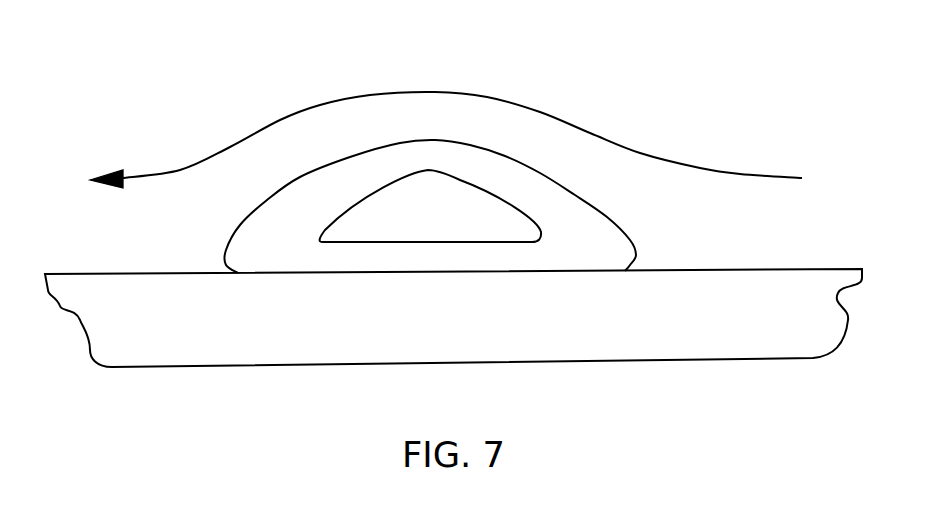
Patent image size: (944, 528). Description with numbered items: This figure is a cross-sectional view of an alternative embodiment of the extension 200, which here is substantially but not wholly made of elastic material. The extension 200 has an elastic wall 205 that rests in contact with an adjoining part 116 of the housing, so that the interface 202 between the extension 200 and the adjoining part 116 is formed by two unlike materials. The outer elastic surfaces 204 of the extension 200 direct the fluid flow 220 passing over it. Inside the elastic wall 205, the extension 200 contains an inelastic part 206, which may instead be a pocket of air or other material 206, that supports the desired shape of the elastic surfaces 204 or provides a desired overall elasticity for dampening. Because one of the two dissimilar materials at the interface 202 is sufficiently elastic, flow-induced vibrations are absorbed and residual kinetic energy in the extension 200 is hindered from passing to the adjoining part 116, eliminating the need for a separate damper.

The adjoining part of the housing 116 is at (360, 364).
The extension 200 is at (240, 197).
The interface 202 is at (270, 258).
The elastic surface 204 is at (565, 183).
The elastic wall 205 is at (502, 172).
The inelastic part 206 is at (453, 212).
The fluid flow 220 is at (487, 97).